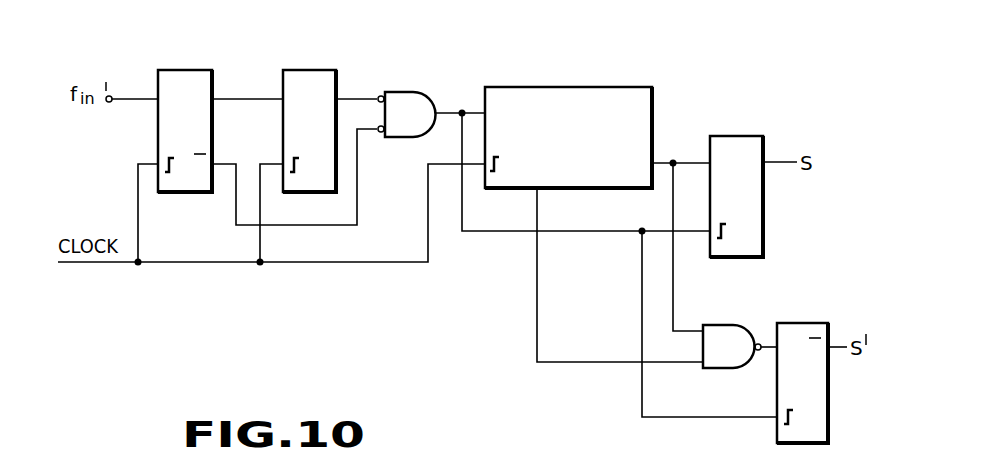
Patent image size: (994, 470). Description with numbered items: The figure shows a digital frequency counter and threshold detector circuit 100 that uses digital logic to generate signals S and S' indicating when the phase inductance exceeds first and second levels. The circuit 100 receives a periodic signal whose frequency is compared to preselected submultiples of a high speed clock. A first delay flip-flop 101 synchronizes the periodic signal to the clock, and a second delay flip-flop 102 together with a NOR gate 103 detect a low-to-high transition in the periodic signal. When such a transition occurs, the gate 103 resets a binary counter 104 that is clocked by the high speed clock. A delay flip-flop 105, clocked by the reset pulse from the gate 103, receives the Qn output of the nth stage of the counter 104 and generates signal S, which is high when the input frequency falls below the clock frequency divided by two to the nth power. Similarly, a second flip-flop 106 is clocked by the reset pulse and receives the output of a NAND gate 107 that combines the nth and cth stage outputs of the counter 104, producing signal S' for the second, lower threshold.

The circuit 100 is at (686, 40).
The first delay flip-flop 101 is at (170, 70).
The second delay flip-flop 102 is at (293, 70).
The NOR gate 103 is at (389, 92).
The binary counter 104 is at (552, 87).
The delay flip-flop 105 is at (725, 136).
The second flip-flop 106 is at (795, 323).
The NAND gate 107 is at (714, 325).